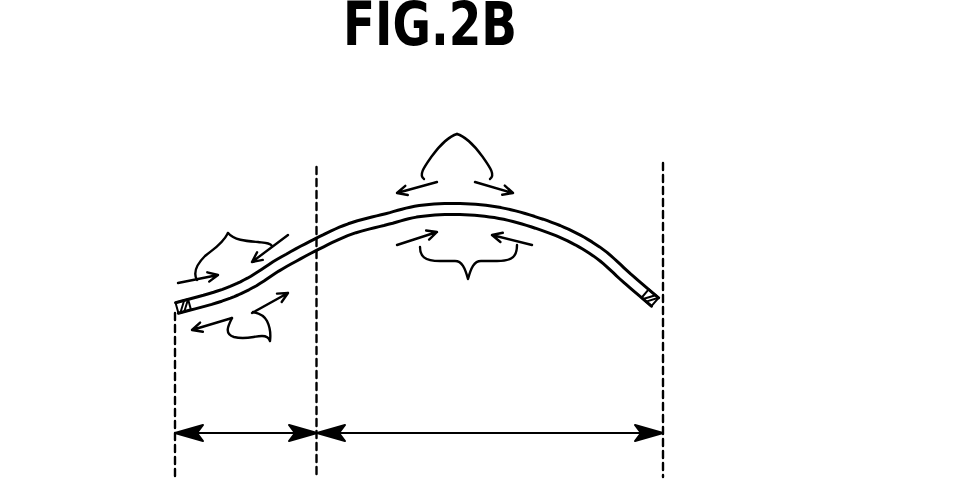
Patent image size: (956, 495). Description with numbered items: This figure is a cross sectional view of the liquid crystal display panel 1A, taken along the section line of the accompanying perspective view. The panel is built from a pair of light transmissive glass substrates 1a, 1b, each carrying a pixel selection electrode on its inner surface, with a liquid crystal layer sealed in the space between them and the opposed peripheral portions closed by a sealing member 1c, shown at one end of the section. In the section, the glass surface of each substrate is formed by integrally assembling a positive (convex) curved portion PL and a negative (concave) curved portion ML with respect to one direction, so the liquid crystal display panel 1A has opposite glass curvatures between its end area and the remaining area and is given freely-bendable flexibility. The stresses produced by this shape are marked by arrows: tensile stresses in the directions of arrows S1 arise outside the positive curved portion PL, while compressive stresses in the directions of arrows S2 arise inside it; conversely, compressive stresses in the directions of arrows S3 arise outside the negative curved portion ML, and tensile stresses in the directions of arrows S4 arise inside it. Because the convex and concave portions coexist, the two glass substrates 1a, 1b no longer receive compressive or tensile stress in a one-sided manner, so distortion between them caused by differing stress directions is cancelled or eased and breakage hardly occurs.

The liquid crystal display panel 1A is at (574, 206).
The light transmissive glass substrate 1a is at (355, 217).
The light transmissive glass substrate 1b is at (357, 237).
The sealing member 1c is at (662, 299).
The tensile stress direction arrows S1 is at (457, 134).
The compressive stress direction arrows S2 is at (464, 275).
The compressive stress direction arrows S3 is at (228, 233).
The tensile stress direction arrows S4 is at (249, 335).
The negative (concave) curved portion ML is at (246, 418).
The positive (convex) curved portion PL is at (490, 418).